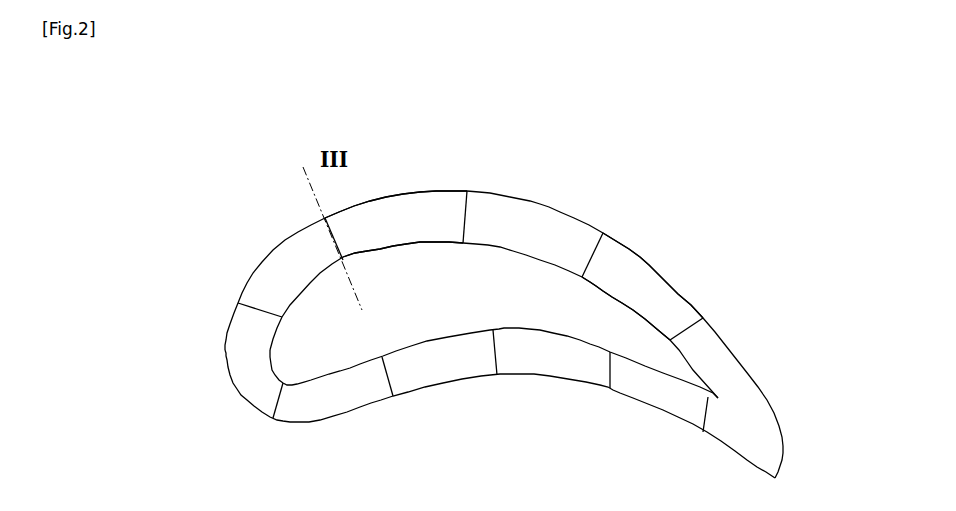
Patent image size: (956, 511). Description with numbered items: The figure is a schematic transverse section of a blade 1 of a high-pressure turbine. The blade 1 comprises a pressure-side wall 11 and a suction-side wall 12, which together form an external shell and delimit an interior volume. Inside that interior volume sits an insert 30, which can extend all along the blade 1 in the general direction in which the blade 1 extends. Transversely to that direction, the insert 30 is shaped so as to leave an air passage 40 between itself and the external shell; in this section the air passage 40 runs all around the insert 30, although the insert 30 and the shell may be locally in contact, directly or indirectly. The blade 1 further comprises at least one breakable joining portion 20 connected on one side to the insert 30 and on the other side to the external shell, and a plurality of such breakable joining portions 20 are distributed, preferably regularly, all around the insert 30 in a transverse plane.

The blade 1 is at (526, 288).
The pressure-side wall 11 is at (443, 385).
The suction-side wall 12 is at (526, 283).
The breakable joining portion 20 is at (593, 260).
The insert 30 is at (633, 303).
The air passage 40 is at (427, 213).